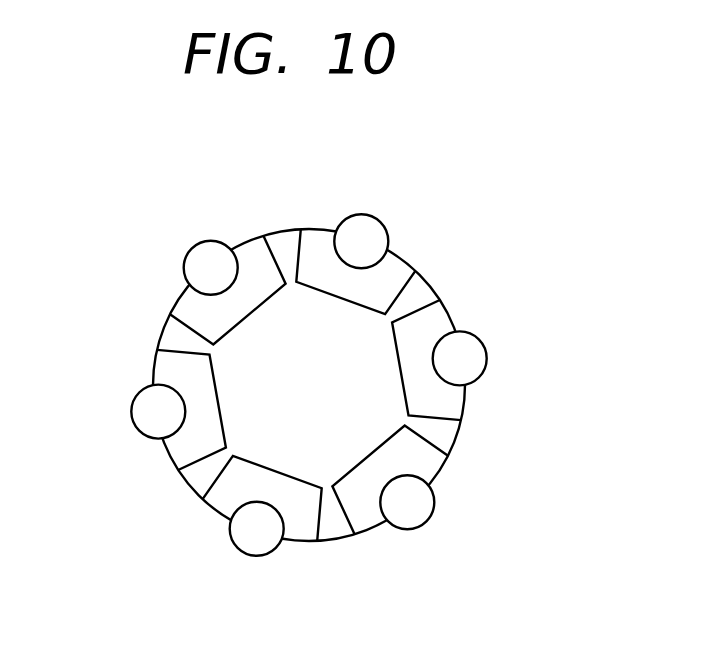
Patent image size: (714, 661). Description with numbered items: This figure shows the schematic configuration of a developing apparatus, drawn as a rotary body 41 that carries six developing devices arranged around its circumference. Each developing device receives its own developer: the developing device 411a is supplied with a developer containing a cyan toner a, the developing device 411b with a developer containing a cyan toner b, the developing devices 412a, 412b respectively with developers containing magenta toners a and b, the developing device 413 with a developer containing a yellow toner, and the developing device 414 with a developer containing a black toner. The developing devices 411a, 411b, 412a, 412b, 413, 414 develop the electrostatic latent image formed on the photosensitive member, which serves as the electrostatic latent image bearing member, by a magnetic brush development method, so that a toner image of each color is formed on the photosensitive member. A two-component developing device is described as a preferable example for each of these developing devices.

The rotary unit 41 is at (258, 189).
The developing device 411a is at (366, 216).
The developing device 411b is at (487, 356).
The developing device 412a is at (426, 522).
The developing device 412b is at (240, 550).
The developing device 413 is at (131, 420).
The developing device 414 is at (192, 247).